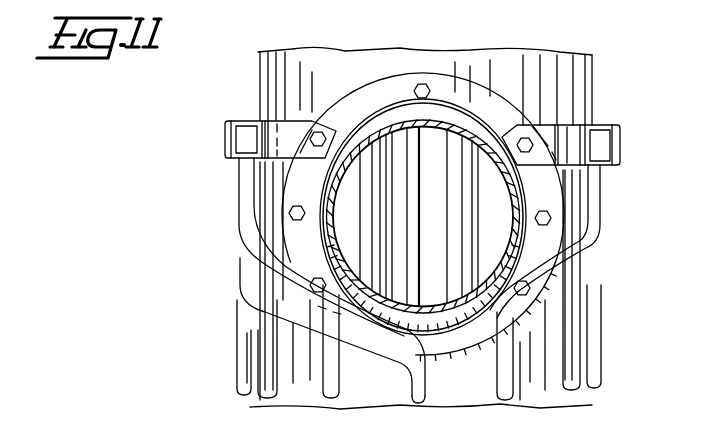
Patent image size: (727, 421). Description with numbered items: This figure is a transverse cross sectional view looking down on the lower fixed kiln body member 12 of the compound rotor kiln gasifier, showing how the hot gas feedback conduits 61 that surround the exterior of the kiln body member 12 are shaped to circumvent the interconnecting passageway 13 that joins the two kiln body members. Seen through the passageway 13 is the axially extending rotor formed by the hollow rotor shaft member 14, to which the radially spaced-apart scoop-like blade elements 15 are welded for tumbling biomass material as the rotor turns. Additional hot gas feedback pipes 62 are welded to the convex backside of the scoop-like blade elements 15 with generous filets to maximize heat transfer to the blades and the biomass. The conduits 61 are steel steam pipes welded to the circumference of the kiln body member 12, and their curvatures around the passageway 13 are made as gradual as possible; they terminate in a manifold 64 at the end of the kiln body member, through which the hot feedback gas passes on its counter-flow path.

The fixed elongated cylindrical kiln body member 12 is at (363, 50).
The interconnecting passageway 13 is at (445, 128).
The hollow rotor shaft member 14 is at (447, 212).
The scoop-like blade elements 15 is at (388, 191).
The hot gas feedback tubular conduits 61 is at (242, 252).
The hot gas feedback pipes 62 is at (370, 250).
The manifold 64 is at (240, 122).